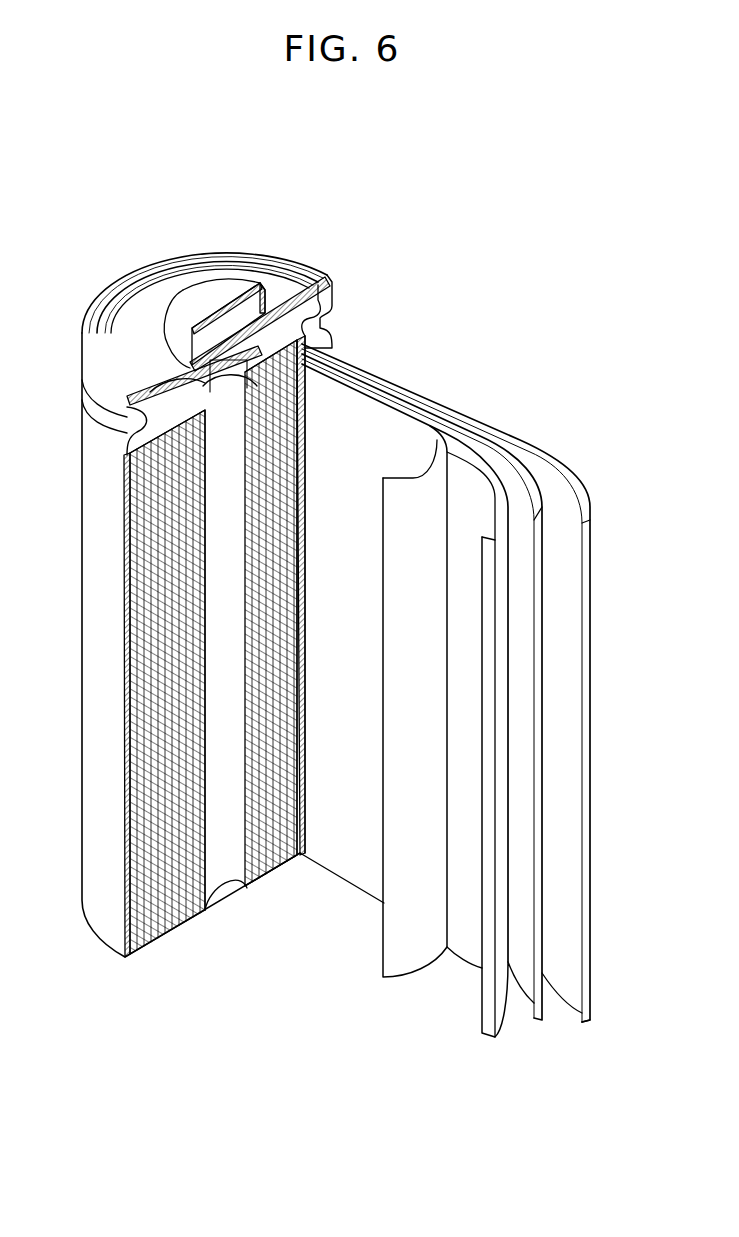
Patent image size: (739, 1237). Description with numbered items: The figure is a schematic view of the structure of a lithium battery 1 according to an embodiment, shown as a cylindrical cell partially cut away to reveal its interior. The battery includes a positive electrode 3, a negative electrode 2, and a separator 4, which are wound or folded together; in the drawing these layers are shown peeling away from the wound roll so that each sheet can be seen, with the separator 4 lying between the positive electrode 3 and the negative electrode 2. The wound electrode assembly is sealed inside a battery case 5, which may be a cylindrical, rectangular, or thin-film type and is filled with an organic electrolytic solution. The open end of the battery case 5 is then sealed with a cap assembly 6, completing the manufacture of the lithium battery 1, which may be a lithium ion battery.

The lithium battery 1 is at (492, 276).
The negative electrode 2 is at (577, 503).
The positive electrode 3 is at (470, 460).
The separator 4 is at (418, 479).
The battery case 5 is at (93, 652).
The cap assembly 6 is at (200, 290).